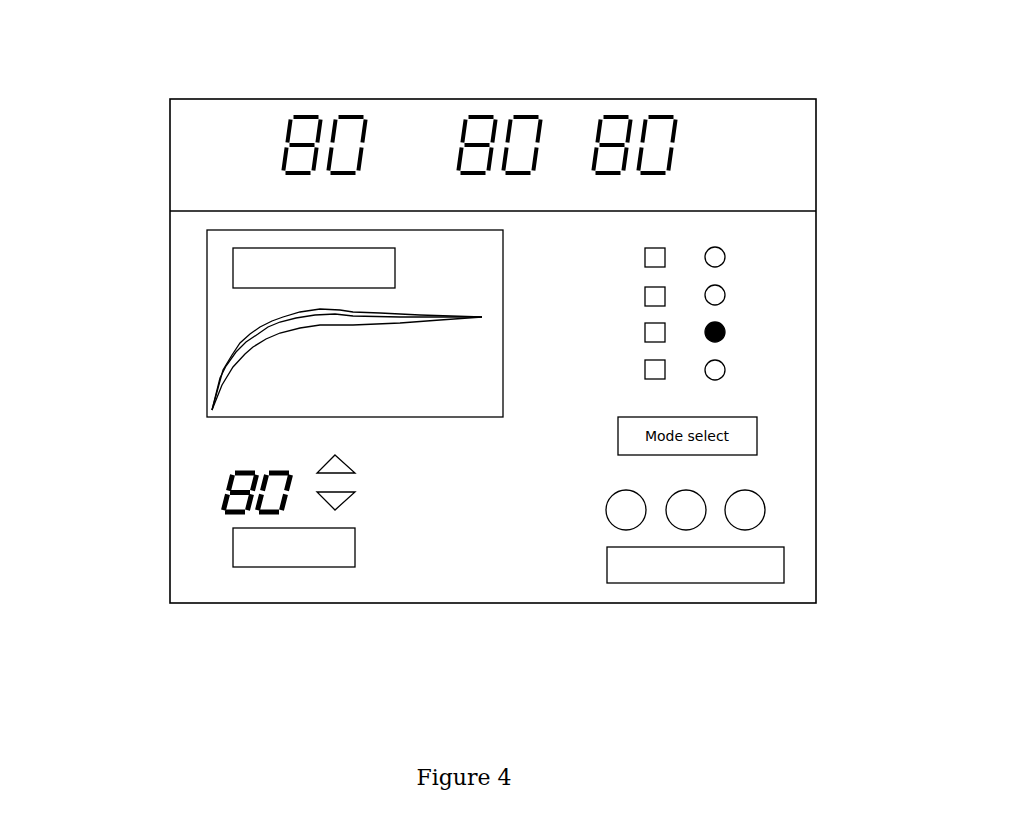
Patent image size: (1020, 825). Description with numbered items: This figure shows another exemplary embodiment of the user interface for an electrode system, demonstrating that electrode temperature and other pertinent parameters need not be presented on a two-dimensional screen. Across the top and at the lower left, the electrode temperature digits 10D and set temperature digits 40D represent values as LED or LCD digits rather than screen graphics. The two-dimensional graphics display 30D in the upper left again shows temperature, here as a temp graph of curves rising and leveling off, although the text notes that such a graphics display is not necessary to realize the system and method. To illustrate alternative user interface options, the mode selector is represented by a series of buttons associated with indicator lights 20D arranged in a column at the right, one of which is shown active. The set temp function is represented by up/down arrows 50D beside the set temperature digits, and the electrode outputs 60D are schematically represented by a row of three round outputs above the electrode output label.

The electrode temperature digits 10D is at (645, 115).
The mode selector buttons with indicator lights 20D is at (745, 360).
The two-dimensional graphics display 30D is at (233, 305).
The set temperature digits 40D is at (217, 492).
The set temp up/down arrows 50D is at (375, 511).
The electrode outputs 60D is at (783, 509).